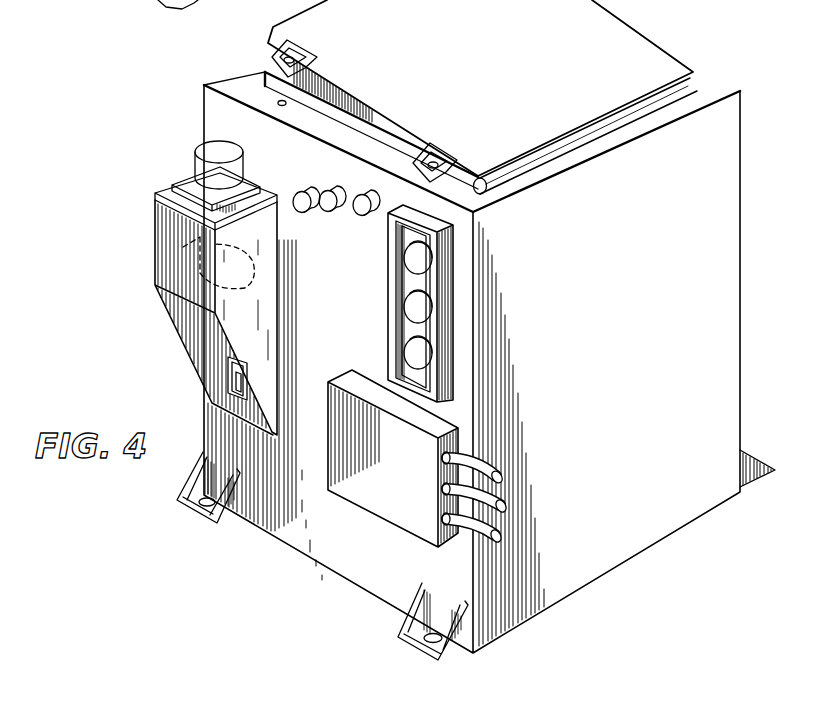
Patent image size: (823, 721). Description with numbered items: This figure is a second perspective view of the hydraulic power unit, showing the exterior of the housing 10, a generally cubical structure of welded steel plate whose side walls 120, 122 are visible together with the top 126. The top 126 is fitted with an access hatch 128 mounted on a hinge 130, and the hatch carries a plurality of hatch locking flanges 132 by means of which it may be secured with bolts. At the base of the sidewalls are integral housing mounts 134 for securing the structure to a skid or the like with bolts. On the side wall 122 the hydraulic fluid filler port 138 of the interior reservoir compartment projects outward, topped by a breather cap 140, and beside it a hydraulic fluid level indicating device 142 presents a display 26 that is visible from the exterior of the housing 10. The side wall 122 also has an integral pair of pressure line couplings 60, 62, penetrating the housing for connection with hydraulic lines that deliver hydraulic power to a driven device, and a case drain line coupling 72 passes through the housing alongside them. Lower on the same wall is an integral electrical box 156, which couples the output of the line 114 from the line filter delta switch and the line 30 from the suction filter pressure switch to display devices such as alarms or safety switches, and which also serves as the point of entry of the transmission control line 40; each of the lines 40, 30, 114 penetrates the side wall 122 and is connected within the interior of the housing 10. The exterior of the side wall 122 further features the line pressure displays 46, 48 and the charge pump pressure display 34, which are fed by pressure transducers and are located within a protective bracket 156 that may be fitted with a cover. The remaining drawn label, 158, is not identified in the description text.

The housing 10 is at (741, 204).
The display 26 is at (238, 381).
The line 30 is at (507, 505).
The charge pump pressure display 34 is at (424, 358).
The transmission control line 40 is at (494, 470).
The line pressure display 46 is at (424, 259).
The line pressure display 48 is at (424, 309).
The pressure line coupling 60 is at (329, 190).
The pressure line coupling 62 is at (370, 214).
The case drain line coupling 72 is at (302, 191).
The line 114 is at (514, 534).
The side wall 120 is at (563, 434).
The side wall 122 is at (206, 120).
The top 126 is at (713, 84).
The access hatch 128 is at (480, 88).
The hinge 130 is at (597, 137).
The hatch locking flange 132 is at (316, 58).
The housing mount 134 is at (198, 516).
The hydraulic fluid filler port 138 is at (155, 255).
The breather cap 140 is at (194, 164).
The hydraulic fluid level indicating device 142 is at (230, 398).
The electrical box 156 is at (328, 395).
The indicator panel 158 is at (428, 303).